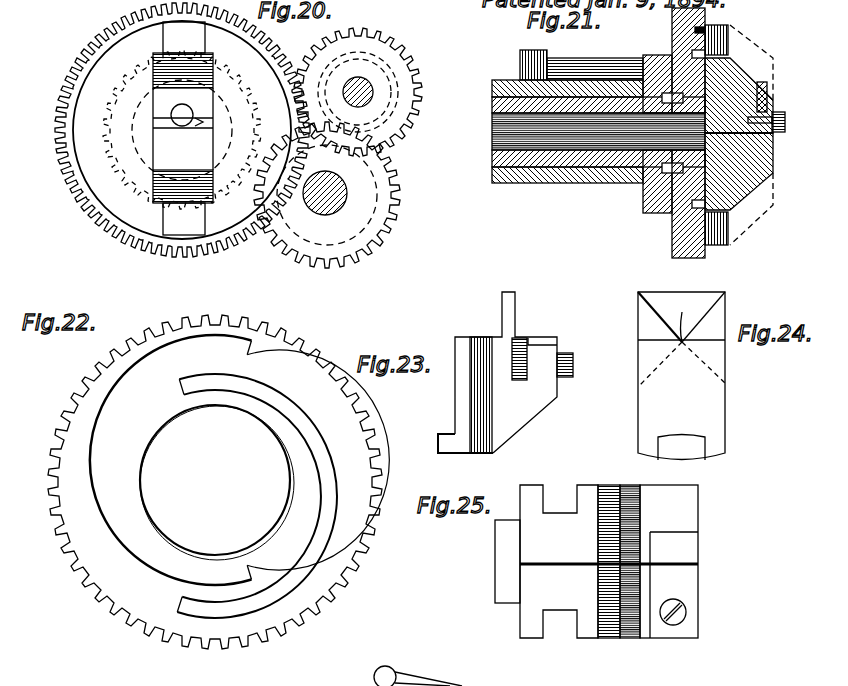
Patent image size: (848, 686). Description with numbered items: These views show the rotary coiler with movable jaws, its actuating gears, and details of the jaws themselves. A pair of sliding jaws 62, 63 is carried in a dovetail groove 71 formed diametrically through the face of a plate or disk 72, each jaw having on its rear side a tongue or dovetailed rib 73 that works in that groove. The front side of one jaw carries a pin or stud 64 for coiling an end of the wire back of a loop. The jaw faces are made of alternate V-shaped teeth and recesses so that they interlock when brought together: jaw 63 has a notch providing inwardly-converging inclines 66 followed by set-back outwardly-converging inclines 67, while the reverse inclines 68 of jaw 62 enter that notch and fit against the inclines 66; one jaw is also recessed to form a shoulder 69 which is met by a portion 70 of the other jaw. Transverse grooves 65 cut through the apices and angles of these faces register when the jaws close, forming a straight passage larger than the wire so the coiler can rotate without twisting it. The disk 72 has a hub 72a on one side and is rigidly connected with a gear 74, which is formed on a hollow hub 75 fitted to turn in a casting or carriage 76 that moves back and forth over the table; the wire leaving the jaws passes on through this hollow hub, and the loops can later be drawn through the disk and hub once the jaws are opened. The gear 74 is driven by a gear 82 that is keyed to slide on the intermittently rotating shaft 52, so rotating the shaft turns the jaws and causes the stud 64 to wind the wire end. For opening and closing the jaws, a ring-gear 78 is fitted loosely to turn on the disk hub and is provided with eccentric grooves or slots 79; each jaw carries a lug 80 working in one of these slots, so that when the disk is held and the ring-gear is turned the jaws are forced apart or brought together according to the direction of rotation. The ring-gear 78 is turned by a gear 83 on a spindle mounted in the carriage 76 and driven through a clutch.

In FIG. 20, the shaft 52 is at (340, 203).
In FIG. 20, the sliding jaw 62 is at (183, 91).
In FIG. 21, the sliding jaw 62 is at (739, 79).
In FIG. 23, the sliding jaw 62 is at (506, 372).
In FIG. 20, the sliding jaw 63 is at (183, 166).
In FIG. 21, the sliding jaw 63 is at (766, 176).
In FIG. 24, the sliding jaw 63 is at (681, 376).
In FIG. 25, the sliding jaw 63 is at (683, 561).
In FIG. 20, the pin or stud 64 is at (180, 108).
In FIG. 21, the pin or stud 64 is at (779, 107).
In FIG. 23, the pin or stud 64 is at (578, 360).
In FIG. 21, the transverse grooves 65 is at (774, 134).
In FIG. 24, the transverse grooves 65 is at (685, 319).
In FIG. 25, the transverse grooves 65 is at (543, 565).
In FIG. 24, the inwardly-converging inclines 66 is at (681, 314).
In FIG. 25, the inwardly-converging inclines 66 is at (637, 492).
In FIG. 24, the outwardly-converging inclines 67 is at (648, 371).
In FIG. 25, the outwardly-converging inclines 67 is at (608, 493).
In FIG. 23, the inclines 68 is at (518, 342).
In FIG. 25, the shoulder 69 is at (688, 603).
In FIG. 23, the portion 70 is at (542, 352).
In FIG. 20, the dovetail groove 71 is at (184, 128).
In FIG. 20, the plate or disk 72 is at (179, 130).
In FIG. 21, the plate or disk 72 is at (712, 25).
In FIG. 21, the hub 72a is at (672, 182).
In FIG. 20, the tongue or dovetailed rib 73 is at (104, 50).
In FIG. 21, the tongue or dovetailed rib 73 is at (675, 26).
In FIG. 25, the tongue or dovetailed rib 73 is at (559, 561).
In FIG. 20, the gear 74 is at (172, 130).
In FIG. 21, the hub 75 is at (496, 100).
In FIG. 21, the casting or carriage 76 is at (598, 150).
In FIG. 22, the ring-gear 78 is at (215, 482).
In FIG. 22, the eccentric grooves or slots 79 is at (314, 556).
In FIG. 23, the lug 80 is at (451, 443).
In FIG. 24, the lug 80 is at (681, 448).
In FIG. 25, the lug 80 is at (507, 561).
In FIG. 20, the gear 82 is at (393, 194).
In FIG. 20, the gear 83 is at (393, 68).